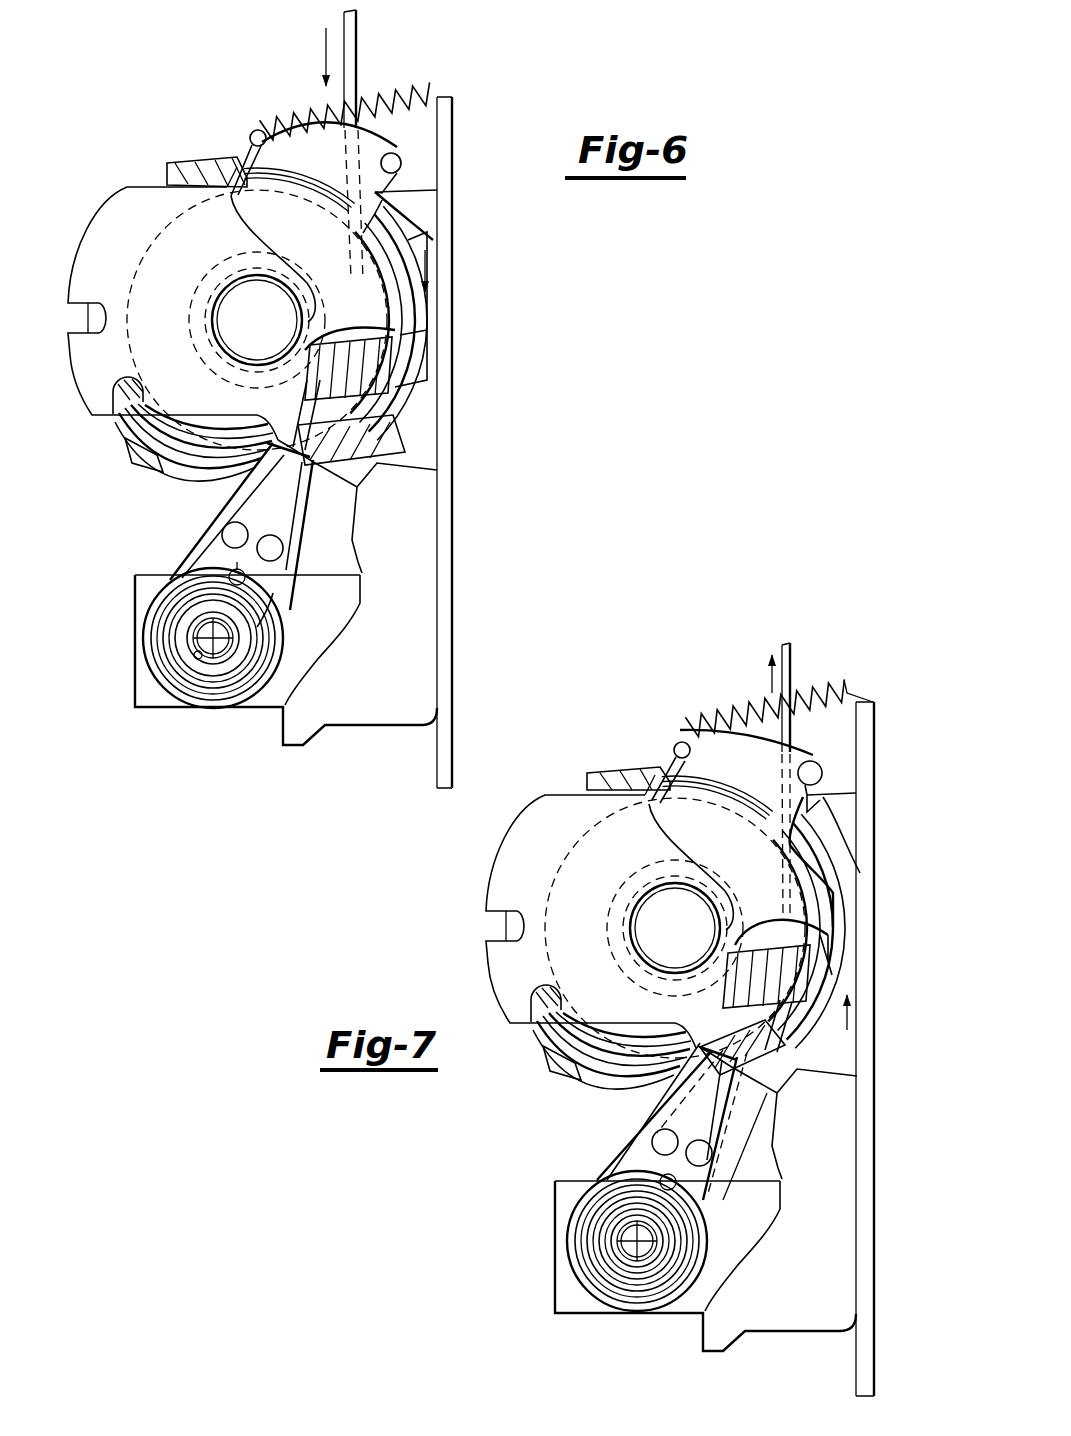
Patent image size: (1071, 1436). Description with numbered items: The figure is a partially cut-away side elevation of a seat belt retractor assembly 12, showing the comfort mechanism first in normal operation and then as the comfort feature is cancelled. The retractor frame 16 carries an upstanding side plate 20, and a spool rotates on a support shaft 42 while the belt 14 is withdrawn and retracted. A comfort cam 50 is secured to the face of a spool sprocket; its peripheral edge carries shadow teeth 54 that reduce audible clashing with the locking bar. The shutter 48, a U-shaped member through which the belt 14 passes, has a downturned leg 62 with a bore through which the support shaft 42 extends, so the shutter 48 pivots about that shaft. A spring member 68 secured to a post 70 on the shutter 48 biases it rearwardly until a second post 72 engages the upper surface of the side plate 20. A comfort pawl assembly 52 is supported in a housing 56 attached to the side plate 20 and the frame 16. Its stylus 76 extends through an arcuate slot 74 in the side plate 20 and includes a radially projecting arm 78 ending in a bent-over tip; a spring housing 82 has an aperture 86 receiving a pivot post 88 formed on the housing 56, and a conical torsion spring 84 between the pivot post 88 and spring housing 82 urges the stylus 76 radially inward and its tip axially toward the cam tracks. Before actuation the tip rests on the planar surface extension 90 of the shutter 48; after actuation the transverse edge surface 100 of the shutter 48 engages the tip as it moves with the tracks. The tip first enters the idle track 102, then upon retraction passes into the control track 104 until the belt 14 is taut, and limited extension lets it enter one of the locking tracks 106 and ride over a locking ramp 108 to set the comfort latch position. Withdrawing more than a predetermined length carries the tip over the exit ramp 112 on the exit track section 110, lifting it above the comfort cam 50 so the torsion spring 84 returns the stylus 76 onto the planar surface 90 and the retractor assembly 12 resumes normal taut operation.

In FIG. 7, the retractor assembly 12 is at (497, 840).
In FIG. 6, the belt 14 is at (352, 32).
In FIG. 7, the belt 14 is at (790, 667).
In FIG. 6, the retractor frame 16 is at (437, 542).
In FIG. 7, the retractor frame 16 is at (857, 1124).
In FIG. 6, the side plate 20 is at (418, 210).
In FIG. 7, the side plate 20 is at (562, 800).
In FIG. 6, the support shaft 42 is at (243, 317).
In FIG. 7, the support shaft 42 is at (662, 930).
In FIG. 6, the shutter 48 is at (398, 145).
In FIG. 7, the shutter 48 is at (821, 753).
In FIG. 6, the comfort cam 50 is at (147, 450).
In FIG. 7, the comfort cam 50 is at (543, 1052).
In FIG. 6, the comfort pawl assembly 52 is at (316, 660).
In FIG. 7, the comfort pawl assembly 52 is at (767, 1225).
In FIG. 6, the shadow teeth 54 is at (160, 473).
In FIG. 7, the shadow teeth 54 is at (607, 1090).
In FIG. 6, the housing 56 is at (437, 664).
In FIG. 7, the housing 56 is at (797, 1313).
In FIG. 6, the downturned leg 62 is at (262, 167).
In FIG. 6, the spring member 68 is at (388, 88).
In FIG. 7, the spring member 68 is at (713, 724).
In FIG. 6, the post 70 is at (250, 135).
In FIG. 7, the post 70 is at (674, 748).
In FIG. 6, the second post 72 is at (400, 163).
In FIG. 7, the second post 72 is at (821, 773).
In FIG. 7, the arcuate slot 74 is at (728, 925).
In FIG. 6, the stylus 76 is at (296, 607).
In FIG. 7, the stylus 76 is at (740, 1142).
In FIG. 6, the radially projecting arm 78 is at (370, 460).
In FIG. 7, the radially projecting arm 78 is at (765, 1045).
In FIG. 6, the spring housing 82 is at (208, 710).
In FIG. 7, the spring housing 82 is at (648, 1307).
In FIG. 6, the conical torsion spring 84 is at (232, 690).
In FIG. 7, the conical torsion spring 84 is at (613, 1293).
In FIG. 7, the aperture 86 is at (622, 1252).
In FIG. 7, the pivot post 88 is at (625, 1230).
In FIG. 7, the outer planar surface extension 90 is at (805, 915).
In FIG. 7, the transverse edge surface 100 is at (830, 978).
In FIG. 6, the idle track 102 is at (410, 335).
In FIG. 6, the control track 104 is at (390, 410).
In FIG. 7, the control track 104 is at (766, 976).
In FIG. 6, the locking tracks 106 is at (395, 450).
In FIG. 7, the locking tracks 106 is at (800, 1007).
In FIG. 6, the locking ramp 108 is at (395, 360).
In FIG. 6, the exit track section 110 is at (200, 485).
In FIG. 6, the exit ramp 112 is at (120, 420).